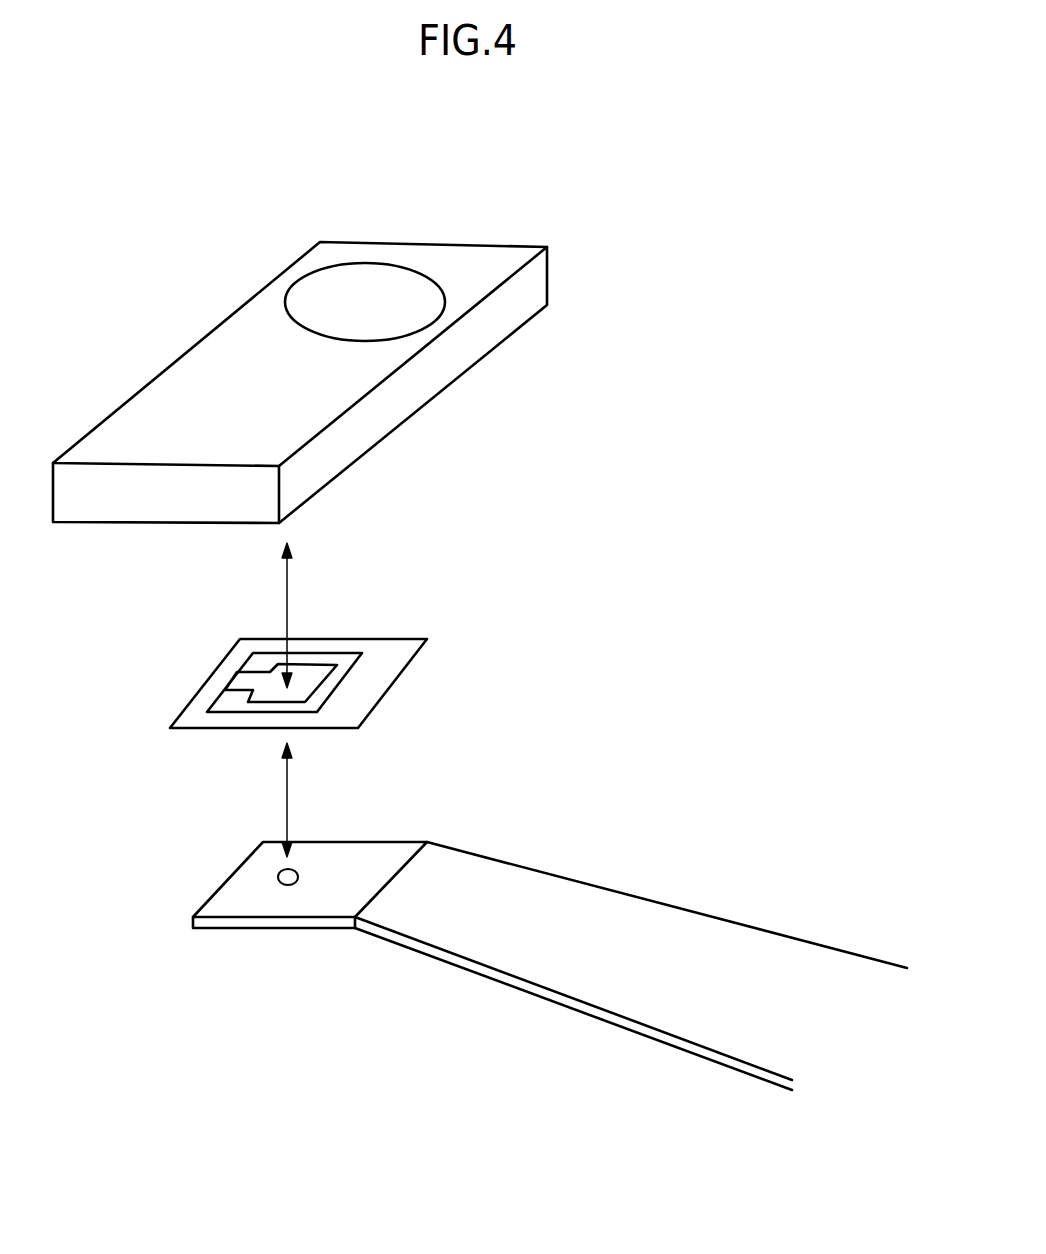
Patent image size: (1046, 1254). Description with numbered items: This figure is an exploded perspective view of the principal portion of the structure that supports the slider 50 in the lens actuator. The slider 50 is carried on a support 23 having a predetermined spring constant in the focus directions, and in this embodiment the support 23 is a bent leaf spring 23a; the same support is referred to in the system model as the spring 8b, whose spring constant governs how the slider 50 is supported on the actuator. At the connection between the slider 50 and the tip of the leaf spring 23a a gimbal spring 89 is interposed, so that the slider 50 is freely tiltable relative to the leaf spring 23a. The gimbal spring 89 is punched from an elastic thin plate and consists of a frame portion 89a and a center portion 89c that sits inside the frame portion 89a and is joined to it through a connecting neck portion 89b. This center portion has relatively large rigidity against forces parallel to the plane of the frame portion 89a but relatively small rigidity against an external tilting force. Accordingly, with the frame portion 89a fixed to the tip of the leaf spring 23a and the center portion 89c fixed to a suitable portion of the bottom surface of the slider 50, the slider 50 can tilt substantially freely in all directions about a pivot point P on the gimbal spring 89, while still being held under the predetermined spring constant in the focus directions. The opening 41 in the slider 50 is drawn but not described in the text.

The opening 41 is at (383, 285).
The slider 50 is at (480, 262).
The gimbal spring 89 is at (319, 636).
The frame portion 89a is at (365, 692).
The connecting neck portion 89b is at (250, 680).
The center portion 89c is at (308, 673).
The pivot point P is at (278, 875).
The spring 8b is at (590, 907).
The bent leaf spring 23a is at (660, 913).
The support 23 is at (540, 944).